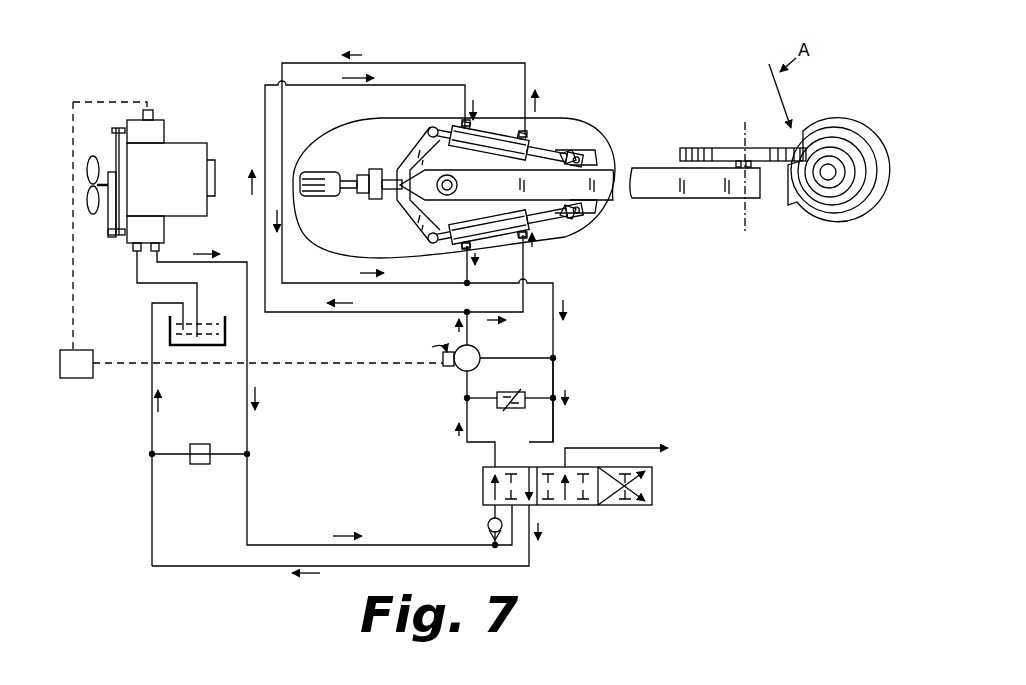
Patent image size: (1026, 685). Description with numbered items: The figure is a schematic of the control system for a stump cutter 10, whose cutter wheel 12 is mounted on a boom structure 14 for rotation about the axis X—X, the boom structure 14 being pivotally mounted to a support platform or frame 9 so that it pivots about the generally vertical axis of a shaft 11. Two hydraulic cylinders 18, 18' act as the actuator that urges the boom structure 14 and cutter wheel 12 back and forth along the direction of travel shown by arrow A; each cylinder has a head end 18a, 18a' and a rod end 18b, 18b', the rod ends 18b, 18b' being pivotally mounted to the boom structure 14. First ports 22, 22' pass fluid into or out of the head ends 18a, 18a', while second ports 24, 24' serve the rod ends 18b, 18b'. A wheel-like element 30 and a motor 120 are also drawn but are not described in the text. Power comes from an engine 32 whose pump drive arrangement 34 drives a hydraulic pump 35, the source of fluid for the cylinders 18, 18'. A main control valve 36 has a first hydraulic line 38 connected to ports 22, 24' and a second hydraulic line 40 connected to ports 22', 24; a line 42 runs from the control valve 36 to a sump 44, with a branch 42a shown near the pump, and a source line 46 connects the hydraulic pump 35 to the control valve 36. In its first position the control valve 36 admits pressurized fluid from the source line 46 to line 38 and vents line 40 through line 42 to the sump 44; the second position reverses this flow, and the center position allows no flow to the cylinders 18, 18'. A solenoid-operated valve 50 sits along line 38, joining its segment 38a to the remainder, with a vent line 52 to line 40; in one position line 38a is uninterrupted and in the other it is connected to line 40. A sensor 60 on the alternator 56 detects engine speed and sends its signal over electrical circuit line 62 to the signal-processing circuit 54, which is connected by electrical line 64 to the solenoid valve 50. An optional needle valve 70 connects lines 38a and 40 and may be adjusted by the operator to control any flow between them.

The stump cutter 10 is at (698, 50).
The support platform or frame 9 is at (365, 247).
The shaft 11 is at (457, 185).
The cutter wheel 12 is at (718, 148).
The boom structure 14 is at (652, 178).
The hydraulic cylinder 18 is at (505, 105).
The hydraulic cylinder 18' is at (544, 254).
The head end 18a is at (437, 108).
The head end 18a' is at (435, 262).
The rod end 18b is at (607, 130).
The rod end 18b' is at (628, 235).
The first port 22 is at (493, 73).
The first port 22' is at (559, 285).
The second port 24 is at (565, 115).
The second port 24' is at (596, 254).
The coiled hose reel / wheel 30 is at (852, 215).
The engine 32 is at (180, 143).
The pump drive arrangement 34 is at (108, 213).
The hydraulic pump 35 is at (164, 232).
The main control valve 36 is at (632, 505).
The first hydraulic line 38 is at (467, 442).
The line segment 38a is at (465, 385).
The second hydraulic line 40 is at (553, 380).
The line 42 is at (247, 566).
The pump return to reservoir 42a is at (137, 262).
The sump 44 is at (213, 322).
The source line 46 is at (247, 508).
The solenoid-operated valve 50 is at (480, 350).
The vent line 52 is at (523, 358).
The signal-processing circuit 54 is at (68, 350).
The alternator 56 is at (164, 120).
The sensor 60 is at (153, 110).
The electrical circuit line 62 is at (73, 272).
The electrical line 64 is at (340, 365).
The needle valve 70 is at (537, 414).
The hydraulic motor 120 is at (315, 172).